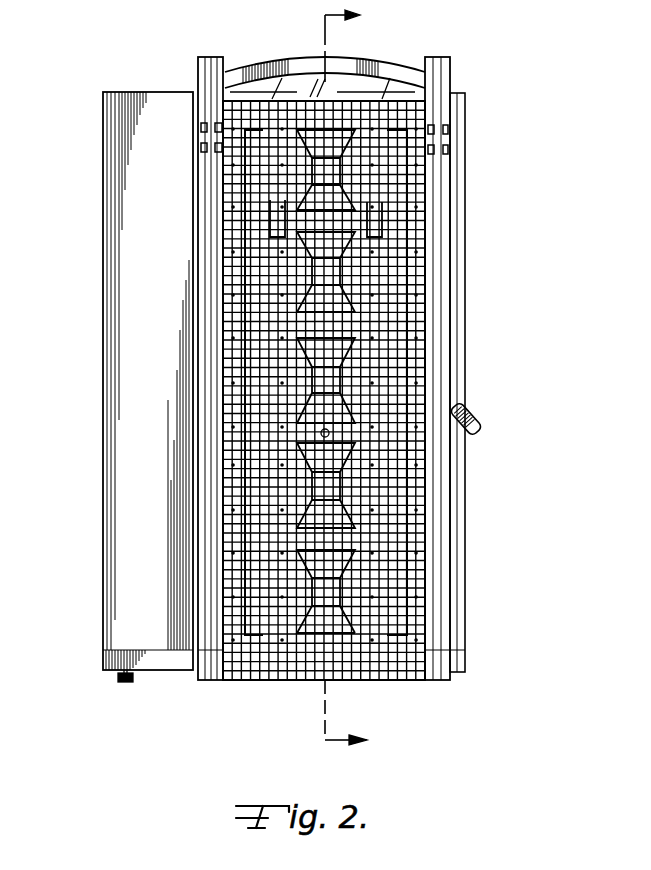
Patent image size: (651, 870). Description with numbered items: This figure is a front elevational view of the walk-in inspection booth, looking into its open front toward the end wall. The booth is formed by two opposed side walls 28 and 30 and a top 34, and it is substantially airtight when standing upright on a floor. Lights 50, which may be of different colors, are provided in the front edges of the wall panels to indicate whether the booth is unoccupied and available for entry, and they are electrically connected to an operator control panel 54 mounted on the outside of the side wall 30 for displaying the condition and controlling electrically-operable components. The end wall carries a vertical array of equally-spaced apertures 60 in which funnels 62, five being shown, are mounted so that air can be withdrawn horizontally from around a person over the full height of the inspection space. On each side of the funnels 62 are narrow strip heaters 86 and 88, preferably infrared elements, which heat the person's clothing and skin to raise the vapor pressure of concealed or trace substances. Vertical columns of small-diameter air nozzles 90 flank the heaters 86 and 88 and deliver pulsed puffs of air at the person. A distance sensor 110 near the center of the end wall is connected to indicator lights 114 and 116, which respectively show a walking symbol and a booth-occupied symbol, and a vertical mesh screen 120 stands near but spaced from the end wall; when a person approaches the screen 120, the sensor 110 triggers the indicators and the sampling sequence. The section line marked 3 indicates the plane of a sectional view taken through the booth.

The section line 3- 3 is at (353, 378).
The side wall 28 is at (198, 488).
The side wall 30 is at (455, 478).
The top 34 is at (272, 70).
The lights 50 is at (201, 128).
The operator control panel 54 is at (480, 412).
The apertures 60 is at (336, 608).
The funnels 62 is at (312, 633).
The strip heater 86 is at (244, 266).
The strip heater 88 is at (408, 259).
The air nozzles 90 is at (418, 340).
The distance sensor 110 is at (321, 431).
The indicator light 114 is at (268, 219).
The indicator light 116 is at (382, 208).
The vertical mesh screen 120 is at (420, 574).